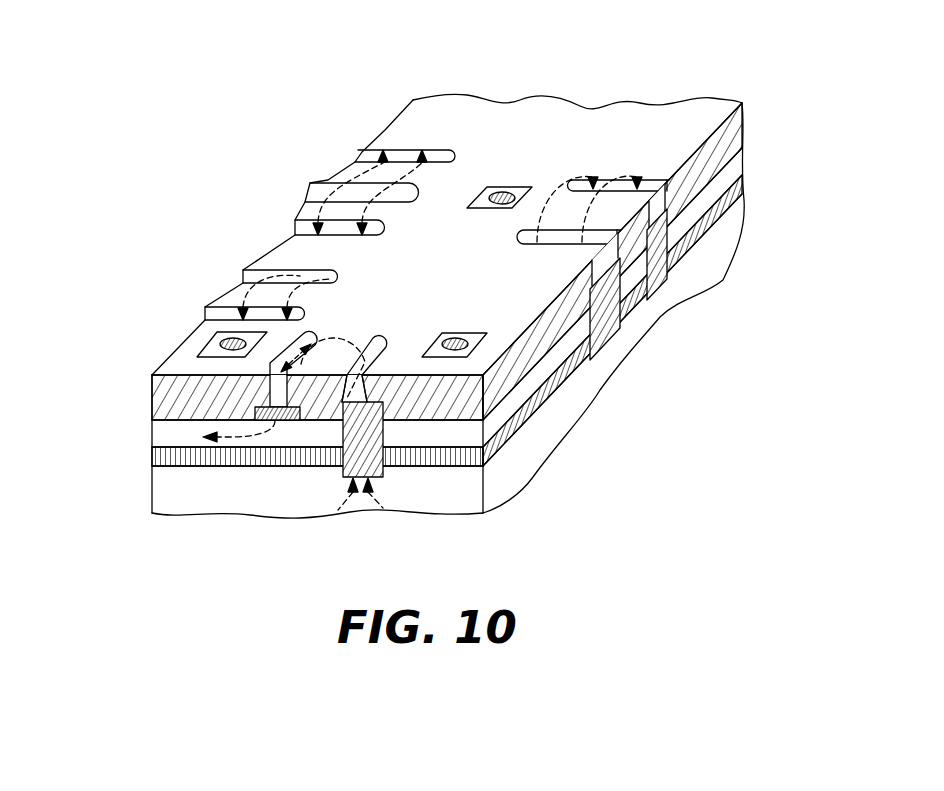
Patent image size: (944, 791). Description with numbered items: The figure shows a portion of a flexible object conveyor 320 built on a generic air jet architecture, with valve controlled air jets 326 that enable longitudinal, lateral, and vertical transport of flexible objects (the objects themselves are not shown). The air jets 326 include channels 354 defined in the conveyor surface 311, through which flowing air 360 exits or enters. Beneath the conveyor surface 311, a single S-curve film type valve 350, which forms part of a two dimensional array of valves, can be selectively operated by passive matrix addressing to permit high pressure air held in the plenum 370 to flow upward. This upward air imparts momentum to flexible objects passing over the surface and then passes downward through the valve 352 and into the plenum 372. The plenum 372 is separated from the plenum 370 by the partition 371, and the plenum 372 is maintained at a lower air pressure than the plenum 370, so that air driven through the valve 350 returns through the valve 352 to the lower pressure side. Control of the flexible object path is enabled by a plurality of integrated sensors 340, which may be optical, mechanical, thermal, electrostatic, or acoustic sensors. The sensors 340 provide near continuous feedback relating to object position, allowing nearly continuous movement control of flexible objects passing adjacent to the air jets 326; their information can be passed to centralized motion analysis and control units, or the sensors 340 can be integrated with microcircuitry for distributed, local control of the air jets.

The conveyor surface 311 is at (583, 118).
The flexible object conveyor 320 is at (330, 58).
The air jets 326 is at (352, 149).
The integrated sensors 340 is at (540, 187).
The S-curve film type valve 350 is at (383, 477).
The valve 352 is at (263, 413).
The channels 354 is at (490, 440).
The flowing air 360 is at (327, 353).
The plenum 370 is at (527, 440).
The partition 371 is at (157, 458).
The plenum 372 is at (533, 368).